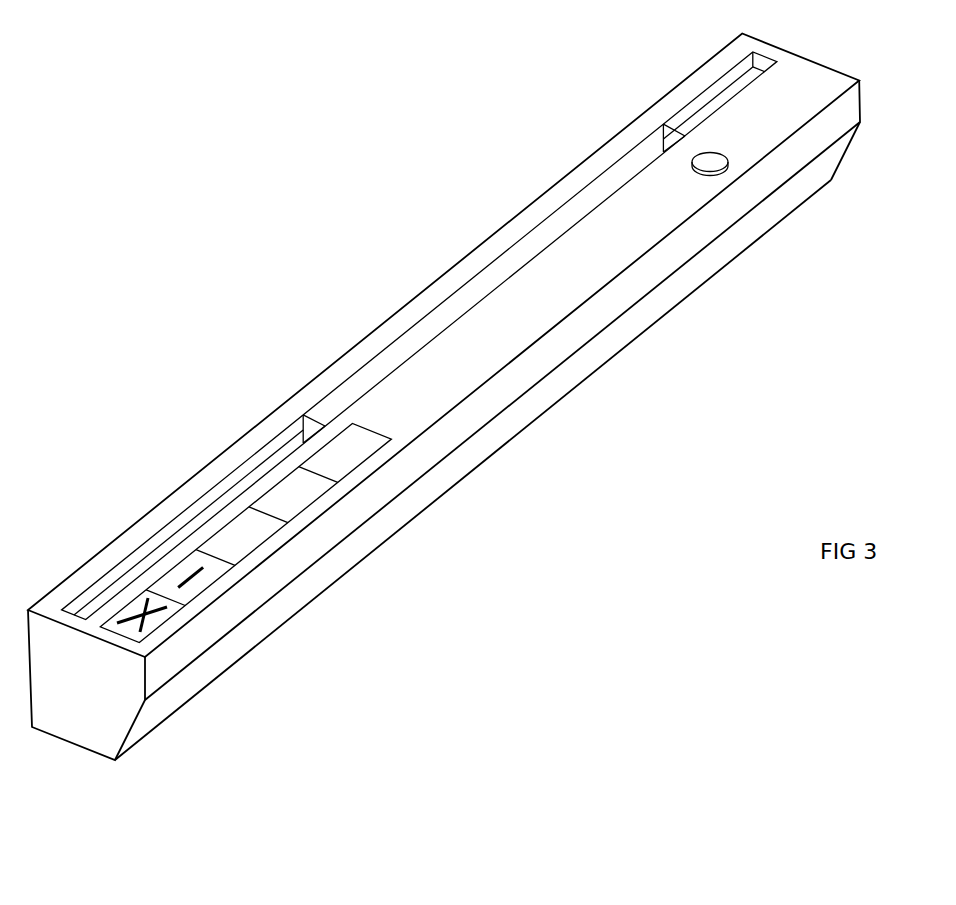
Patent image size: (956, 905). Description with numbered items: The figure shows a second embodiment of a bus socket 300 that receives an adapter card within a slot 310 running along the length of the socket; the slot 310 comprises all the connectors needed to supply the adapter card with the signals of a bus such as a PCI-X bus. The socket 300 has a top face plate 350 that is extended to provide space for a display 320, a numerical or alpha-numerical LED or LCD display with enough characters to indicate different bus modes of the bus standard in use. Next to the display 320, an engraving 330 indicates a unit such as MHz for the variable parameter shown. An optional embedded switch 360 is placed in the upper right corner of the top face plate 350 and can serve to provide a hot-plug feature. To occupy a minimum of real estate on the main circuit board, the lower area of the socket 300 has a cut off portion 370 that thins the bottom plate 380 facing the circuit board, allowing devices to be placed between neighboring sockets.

The socket 300 is at (415, 133).
The slot 310 is at (238, 477).
The display 320 is at (270, 538).
The engraving 330 is at (478, 476).
The top face plate 350 is at (553, 394).
The embedded switch 360 is at (728, 168).
The cut off portion 370 is at (152, 707).
The bottom plate 380 is at (77, 746).